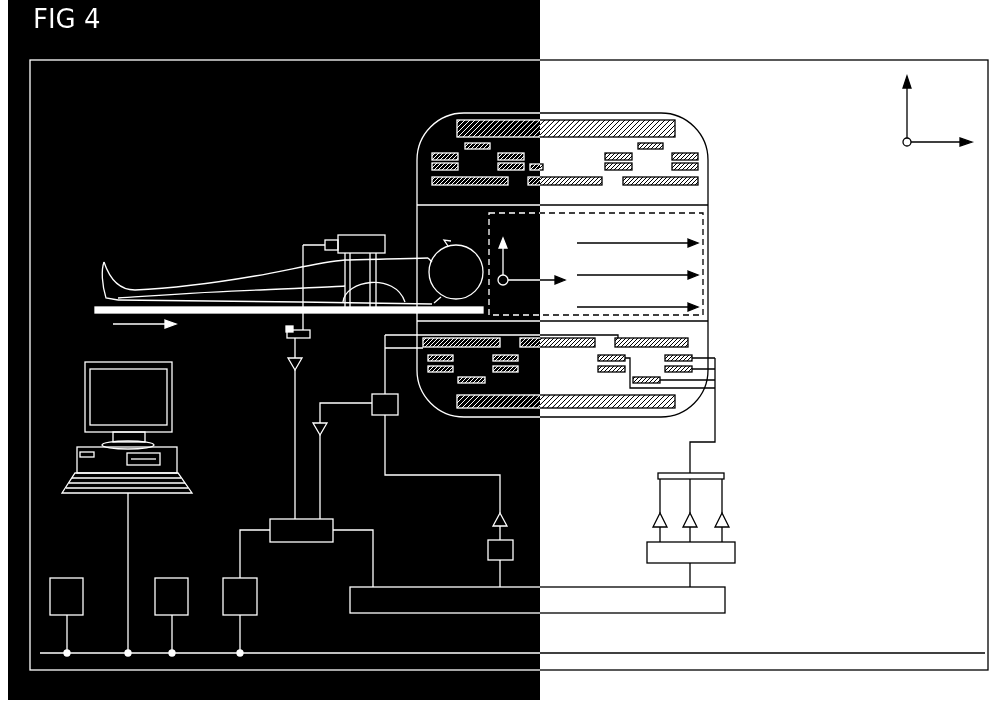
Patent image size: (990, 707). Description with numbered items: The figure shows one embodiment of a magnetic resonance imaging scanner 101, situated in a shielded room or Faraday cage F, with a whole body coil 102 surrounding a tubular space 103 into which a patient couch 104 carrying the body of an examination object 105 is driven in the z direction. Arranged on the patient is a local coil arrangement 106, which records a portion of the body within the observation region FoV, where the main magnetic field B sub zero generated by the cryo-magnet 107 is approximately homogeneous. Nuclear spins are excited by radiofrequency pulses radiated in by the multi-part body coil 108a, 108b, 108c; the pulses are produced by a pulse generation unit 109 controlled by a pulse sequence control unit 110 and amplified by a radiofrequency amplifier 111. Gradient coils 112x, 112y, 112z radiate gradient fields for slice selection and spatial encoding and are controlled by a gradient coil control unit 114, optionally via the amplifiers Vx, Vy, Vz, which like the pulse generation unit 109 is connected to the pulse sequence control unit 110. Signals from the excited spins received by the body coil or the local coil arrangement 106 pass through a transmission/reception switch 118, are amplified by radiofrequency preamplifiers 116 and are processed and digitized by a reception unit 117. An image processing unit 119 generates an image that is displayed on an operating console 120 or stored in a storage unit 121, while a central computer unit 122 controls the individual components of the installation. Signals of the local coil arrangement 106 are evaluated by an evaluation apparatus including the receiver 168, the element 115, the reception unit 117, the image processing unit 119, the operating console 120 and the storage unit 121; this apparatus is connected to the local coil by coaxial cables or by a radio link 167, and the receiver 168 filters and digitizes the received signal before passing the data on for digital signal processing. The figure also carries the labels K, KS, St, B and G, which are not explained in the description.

The magnetic resonance imaging scanner 101 is at (810, 168).
The whole body coil 102 is at (606, 113).
The space 103 is at (395, 207).
The patient couch 104 is at (208, 314).
The examination object 105 is at (106, 262).
The local coil arrangement 106 is at (357, 235).
The cryo-magnet 107 is at (478, 120).
The body coil part 108a is at (432, 181).
The body coil part 108b is at (557, 177).
The body coil part 108c is at (700, 182).
The pulse generation unit 109 is at (514, 550).
The pulse sequence control unit 110 is at (726, 600).
The radiofrequency amplifier 111 is at (510, 520).
The x gradient coil 112x is at (700, 167).
The y gradient coil 112y is at (699, 157).
The z gradient coil 112z is at (666, 146).
The gradient coil control unit 114 is at (736, 552).
The evaluation apparatus element 115 is at (288, 370).
The radiofrequency preamplifier 116 is at (327, 433).
The reception unit 117 is at (300, 542).
The transmission/reception switch 118 is at (372, 396).
The image processing unit 119 is at (232, 578).
The operating console 120 is at (178, 456).
The storage unit 121 is at (67, 578).
The central computer unit 122 is at (172, 578).
The radio connection 167 is at (287, 331).
The receiver 168 is at (288, 340).
The Faraday cage F is at (510, 58).
The head region K is at (416, 226).
The coil system KS is at (540, 163).
The plug connector St is at (326, 244).
The patient body B is at (160, 290).
The gradient/connection G is at (311, 331).
The observation region FoV is at (596, 264).
The x gradient amplifier Vx is at (653, 522).
The y gradient amplifier Vy is at (698, 517).
The z gradient amplifier Vz is at (730, 520).